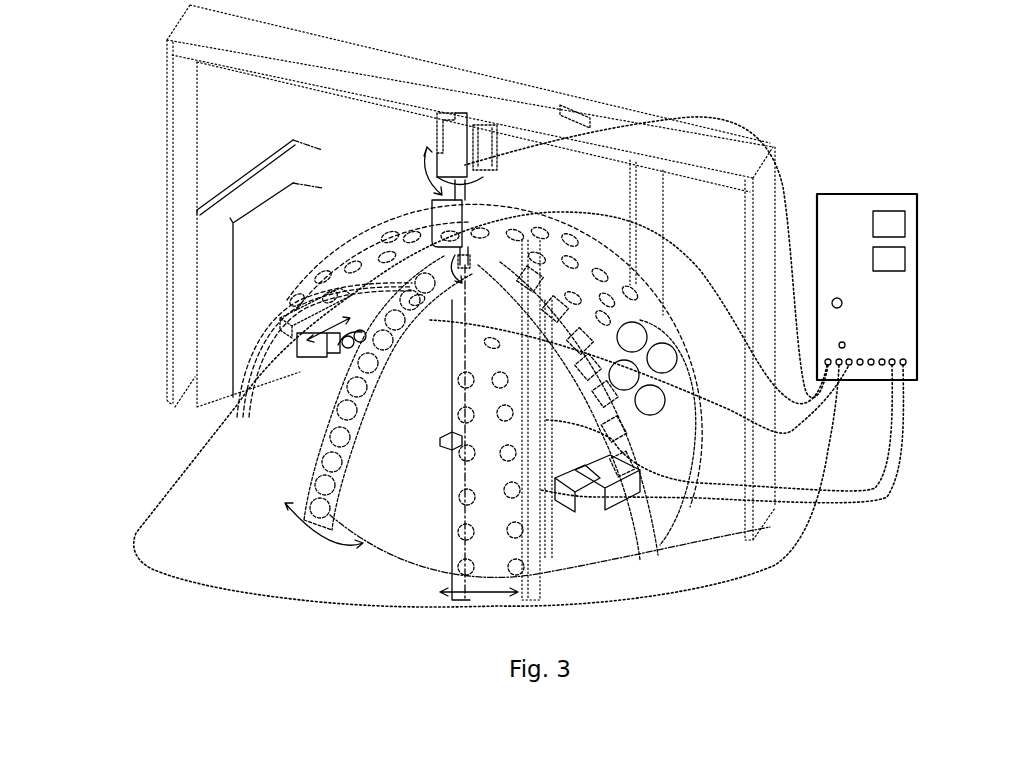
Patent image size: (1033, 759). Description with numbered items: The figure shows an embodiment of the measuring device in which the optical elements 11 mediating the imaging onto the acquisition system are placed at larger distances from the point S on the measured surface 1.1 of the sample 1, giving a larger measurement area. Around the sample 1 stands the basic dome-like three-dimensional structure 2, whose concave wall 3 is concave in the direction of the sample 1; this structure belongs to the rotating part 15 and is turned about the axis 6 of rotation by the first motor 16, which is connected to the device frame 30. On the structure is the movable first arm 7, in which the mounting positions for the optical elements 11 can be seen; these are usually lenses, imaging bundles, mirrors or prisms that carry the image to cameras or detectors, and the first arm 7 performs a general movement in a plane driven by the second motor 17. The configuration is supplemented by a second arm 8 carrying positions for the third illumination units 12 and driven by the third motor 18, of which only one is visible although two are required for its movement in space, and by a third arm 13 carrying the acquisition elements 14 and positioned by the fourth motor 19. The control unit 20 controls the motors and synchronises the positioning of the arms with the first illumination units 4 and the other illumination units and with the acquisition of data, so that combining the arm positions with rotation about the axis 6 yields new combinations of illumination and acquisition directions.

The sample 1 is at (442, 447).
The measured surface 1.1 is at (452, 435).
The basic dome-like three-dimensional structure 2 is at (485, 538).
The concave wall 3 is at (254, 380).
The first illumination units 4 is at (635, 403).
The axis of rotation 6 is at (460, 227).
The first arm 7 is at (610, 507).
The second arm 8 is at (360, 337).
The optical elements mediating the imaging onto the acquisition system 11 is at (557, 372).
The third illumination units 12 is at (350, 327).
The third arm 13 is at (463, 257).
The acquisition elements 14 is at (355, 440).
The rotating part 15 is at (482, 177).
The first motor 16 is at (458, 143).
The second motor 17 is at (597, 493).
The third motor 18 is at (303, 313).
The fourth motor 19 is at (445, 217).
The control unit 20 is at (525, 362).
The device frame 30 is at (570, 115).